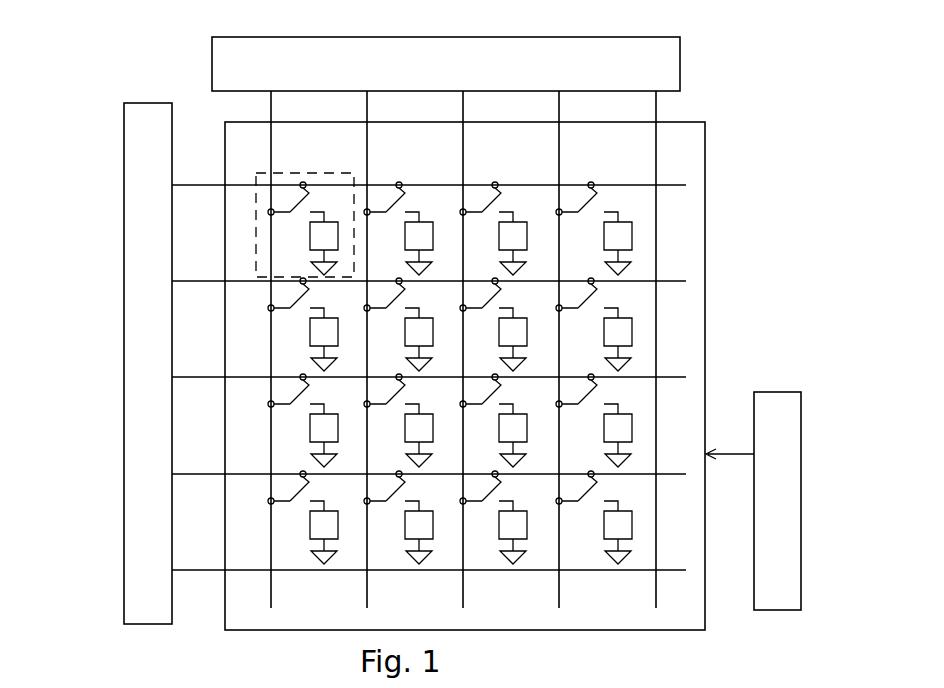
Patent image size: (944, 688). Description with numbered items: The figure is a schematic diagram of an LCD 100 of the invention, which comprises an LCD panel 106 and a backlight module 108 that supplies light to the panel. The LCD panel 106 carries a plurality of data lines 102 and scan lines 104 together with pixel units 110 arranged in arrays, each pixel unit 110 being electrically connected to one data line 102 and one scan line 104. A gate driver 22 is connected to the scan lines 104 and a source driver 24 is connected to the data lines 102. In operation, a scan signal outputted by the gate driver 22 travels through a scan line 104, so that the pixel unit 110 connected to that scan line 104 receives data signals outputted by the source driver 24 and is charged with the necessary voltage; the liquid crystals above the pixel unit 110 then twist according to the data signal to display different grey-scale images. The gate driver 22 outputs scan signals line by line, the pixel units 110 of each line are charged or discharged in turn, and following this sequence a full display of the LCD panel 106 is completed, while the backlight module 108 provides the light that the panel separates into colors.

The LCD 100 is at (457, 22).
The gate driver 22 is at (124, 243).
The source driver 24 is at (680, 60).
The data line 102 is at (271, 116).
The scan line 104 is at (212, 570).
The LCD panel 106 is at (705, 425).
The backlight module 108 is at (775, 570).
The pixel unit 110 is at (307, 173).